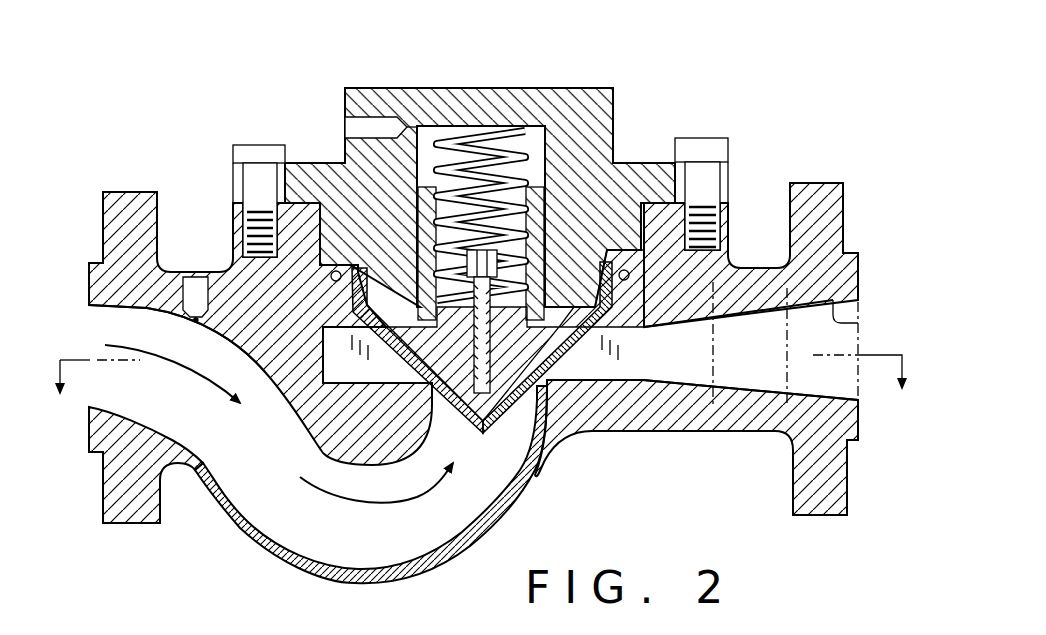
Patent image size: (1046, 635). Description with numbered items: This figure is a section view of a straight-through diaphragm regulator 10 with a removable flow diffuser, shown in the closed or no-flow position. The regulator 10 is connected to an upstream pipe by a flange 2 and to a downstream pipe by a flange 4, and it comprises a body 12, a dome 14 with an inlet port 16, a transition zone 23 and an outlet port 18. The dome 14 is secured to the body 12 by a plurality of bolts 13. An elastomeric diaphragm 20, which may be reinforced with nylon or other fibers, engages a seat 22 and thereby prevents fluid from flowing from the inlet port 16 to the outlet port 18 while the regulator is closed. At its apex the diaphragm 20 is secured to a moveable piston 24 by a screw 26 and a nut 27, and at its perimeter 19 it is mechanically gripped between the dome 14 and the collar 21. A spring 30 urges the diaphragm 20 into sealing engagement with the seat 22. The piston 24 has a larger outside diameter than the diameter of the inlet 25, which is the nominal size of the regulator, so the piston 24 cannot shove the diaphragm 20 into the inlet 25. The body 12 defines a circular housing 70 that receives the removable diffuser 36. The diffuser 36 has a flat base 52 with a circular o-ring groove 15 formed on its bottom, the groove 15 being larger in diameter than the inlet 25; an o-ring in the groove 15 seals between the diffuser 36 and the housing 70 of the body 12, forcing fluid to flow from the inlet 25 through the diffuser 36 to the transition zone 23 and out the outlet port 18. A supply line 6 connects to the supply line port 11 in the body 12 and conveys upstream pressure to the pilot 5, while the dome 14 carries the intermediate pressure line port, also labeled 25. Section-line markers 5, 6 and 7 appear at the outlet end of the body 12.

The flange 2 is at (133, 191).
The flange 4 is at (816, 183).
The pilot 5 is at (710, 285).
The supply line 6 is at (790, 288).
The section line 7- 7 is at (855, 268).
The diaphragm regulator 10 is at (668, 57).
The supply line port 11 is at (192, 277).
The body 12 is at (227, 520).
The bolts 13 is at (253, 150).
The dome 14 is at (595, 105).
The o-ring groove 15 is at (408, 385).
The inlet port 16 is at (124, 310).
The outlet port 18 is at (860, 320).
The perimeter 19 is at (613, 262).
The diaphragm 20 is at (643, 307).
The collar 21 is at (630, 315).
The seat 22 is at (533, 382).
The transition zone 23 is at (745, 383).
The piston 24 is at (428, 185).
The inlet 25 is at (365, 128).
The screw 26 is at (472, 437).
The nut 27 is at (490, 172).
The spring 30 is at (478, 255).
The removable diffuser 36 is at (352, 360).
The flat base 52 is at (330, 395).
The circular housing 70 is at (270, 374).